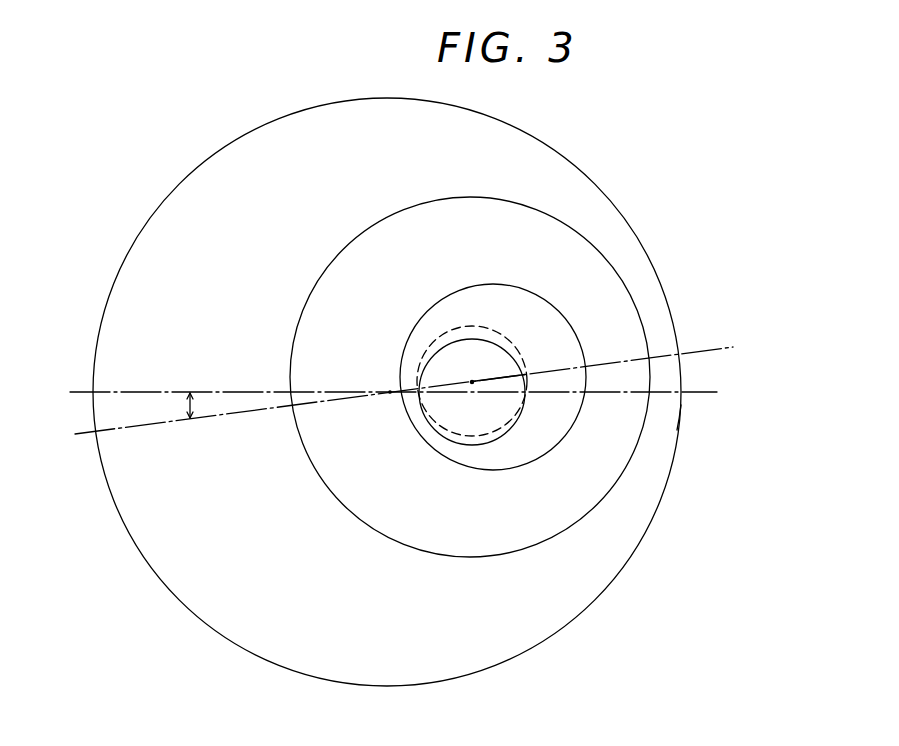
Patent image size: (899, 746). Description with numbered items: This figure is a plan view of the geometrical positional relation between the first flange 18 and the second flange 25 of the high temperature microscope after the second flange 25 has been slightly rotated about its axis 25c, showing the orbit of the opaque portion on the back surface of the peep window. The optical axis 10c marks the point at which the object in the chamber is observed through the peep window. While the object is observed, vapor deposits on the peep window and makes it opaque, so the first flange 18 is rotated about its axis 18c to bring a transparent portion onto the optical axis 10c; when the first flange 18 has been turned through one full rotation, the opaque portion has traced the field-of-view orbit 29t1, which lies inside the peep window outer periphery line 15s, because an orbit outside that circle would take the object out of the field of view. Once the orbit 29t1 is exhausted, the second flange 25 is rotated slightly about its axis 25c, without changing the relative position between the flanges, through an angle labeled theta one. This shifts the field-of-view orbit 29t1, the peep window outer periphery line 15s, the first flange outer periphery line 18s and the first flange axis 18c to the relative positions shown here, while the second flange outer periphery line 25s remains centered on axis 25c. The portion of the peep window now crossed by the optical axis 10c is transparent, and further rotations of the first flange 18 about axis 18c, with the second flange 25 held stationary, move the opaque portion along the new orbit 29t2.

The second flange 25 is at (408, 392).
The first flange 18 is at (512, 383).
The optical axis 10c is at (575, 352).
The field-of-view orbit 29t1 is at (572, 303).
The orbit 29t2 is at (578, 258).
The peep window outer periphery line 15s is at (424, 371).
The first flange outer periphery line 18s is at (425, 376).
The second flange outer periphery line 25s is at (729, 415).
The axis of the first flange 18c is at (617, 422).
The axis of the second flange 25c is at (390, 393).